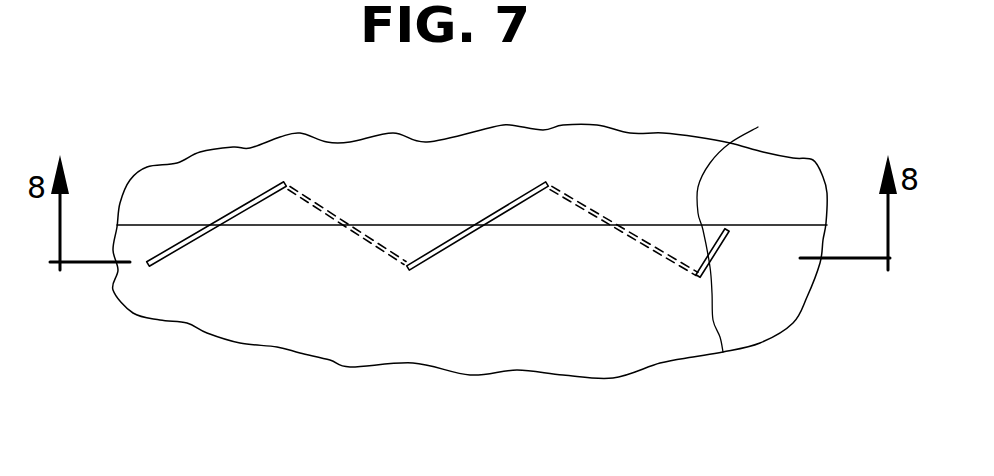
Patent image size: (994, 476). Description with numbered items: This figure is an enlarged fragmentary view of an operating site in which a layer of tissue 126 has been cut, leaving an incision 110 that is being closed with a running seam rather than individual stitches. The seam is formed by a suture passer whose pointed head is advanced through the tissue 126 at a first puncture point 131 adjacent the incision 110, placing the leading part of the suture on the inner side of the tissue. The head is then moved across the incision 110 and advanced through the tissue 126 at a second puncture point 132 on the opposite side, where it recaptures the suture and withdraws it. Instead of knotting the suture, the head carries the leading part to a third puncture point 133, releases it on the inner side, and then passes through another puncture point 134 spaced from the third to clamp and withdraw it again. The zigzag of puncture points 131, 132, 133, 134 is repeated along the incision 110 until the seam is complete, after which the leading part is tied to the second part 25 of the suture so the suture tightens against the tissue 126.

The second part of the suture 25 is at (778, 124).
The incision 110 is at (640, 224).
The tissue layer 126 is at (783, 310).
The puncture point 131 is at (734, 259).
The second puncture point 132 is at (547, 184).
The third puncture point 133 is at (408, 268).
The puncture point 134 is at (285, 184).